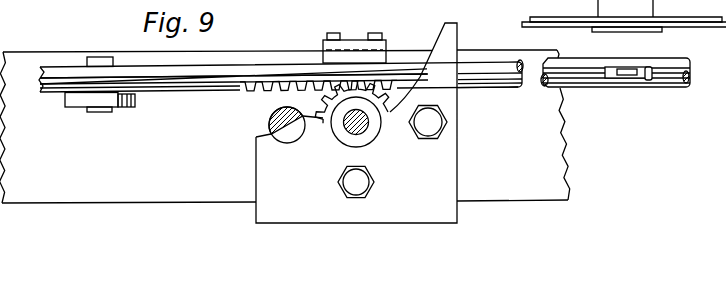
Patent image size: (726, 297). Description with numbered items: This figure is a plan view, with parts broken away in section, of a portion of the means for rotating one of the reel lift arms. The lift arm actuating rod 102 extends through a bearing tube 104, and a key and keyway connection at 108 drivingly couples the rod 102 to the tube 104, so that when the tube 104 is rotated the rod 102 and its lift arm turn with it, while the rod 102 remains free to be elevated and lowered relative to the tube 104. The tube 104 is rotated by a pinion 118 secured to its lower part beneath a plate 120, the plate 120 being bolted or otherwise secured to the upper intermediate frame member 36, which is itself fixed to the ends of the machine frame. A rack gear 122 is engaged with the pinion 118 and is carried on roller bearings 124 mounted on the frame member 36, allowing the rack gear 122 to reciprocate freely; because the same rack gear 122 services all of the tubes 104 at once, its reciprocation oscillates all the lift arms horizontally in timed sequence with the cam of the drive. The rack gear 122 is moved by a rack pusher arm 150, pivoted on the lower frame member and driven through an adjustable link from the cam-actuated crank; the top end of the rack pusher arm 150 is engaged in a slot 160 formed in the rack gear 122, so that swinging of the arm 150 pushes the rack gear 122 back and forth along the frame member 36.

The upper intermediate frame member 36 is at (543, 135).
The lift arm actuating rod 102 is at (368, 128).
The bearing tube 104 is at (361, 140).
The key and keyway connection 108 is at (352, 133).
The pinion 118 is at (378, 93).
The plate 120 is at (440, 157).
The rack gear 122 is at (483, 70).
The roller bearings 124 is at (130, 108).
The rack pusher arm 150 is at (628, 76).
The slot 160 is at (648, 82).